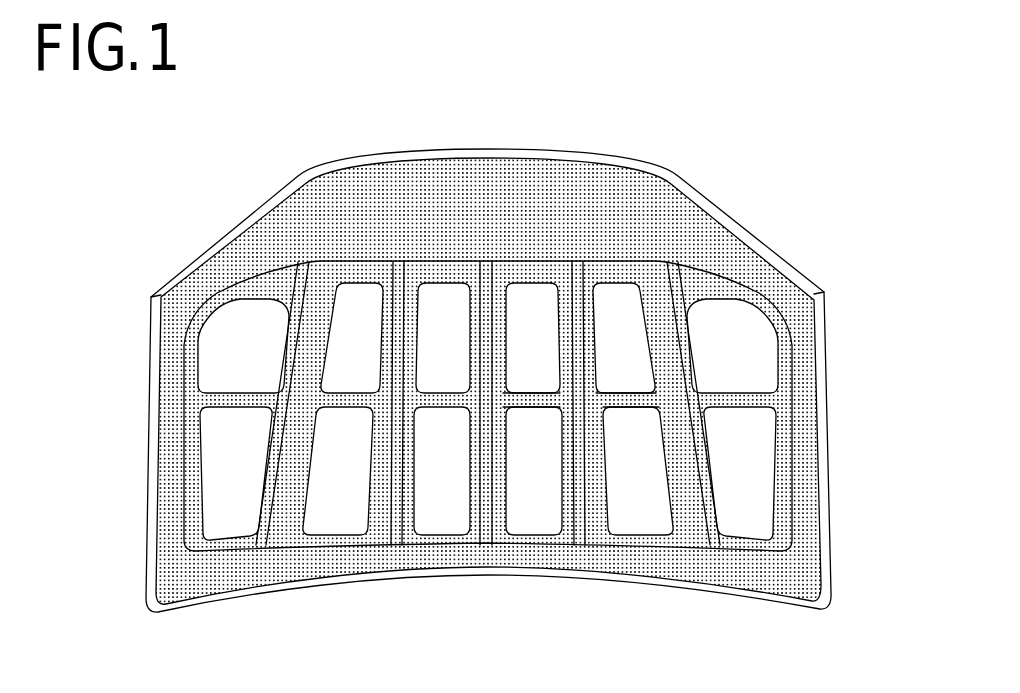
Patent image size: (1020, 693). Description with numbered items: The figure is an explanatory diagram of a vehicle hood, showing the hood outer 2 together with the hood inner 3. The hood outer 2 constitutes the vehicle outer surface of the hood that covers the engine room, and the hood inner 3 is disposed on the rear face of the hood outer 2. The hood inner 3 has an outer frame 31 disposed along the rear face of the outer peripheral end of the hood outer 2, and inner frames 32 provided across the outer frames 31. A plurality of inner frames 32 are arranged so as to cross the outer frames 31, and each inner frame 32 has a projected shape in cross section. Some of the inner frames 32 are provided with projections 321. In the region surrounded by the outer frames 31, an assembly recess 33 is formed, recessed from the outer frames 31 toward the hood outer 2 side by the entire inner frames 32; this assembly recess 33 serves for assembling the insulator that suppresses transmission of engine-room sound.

The hood outer 2 is at (750, 228).
The hood inner 3 is at (288, 238).
The outer frame 31 is at (582, 205).
The inner frame 32 is at (502, 458).
The projection 321 is at (587, 415).
The assembly recess 33 is at (448, 272).